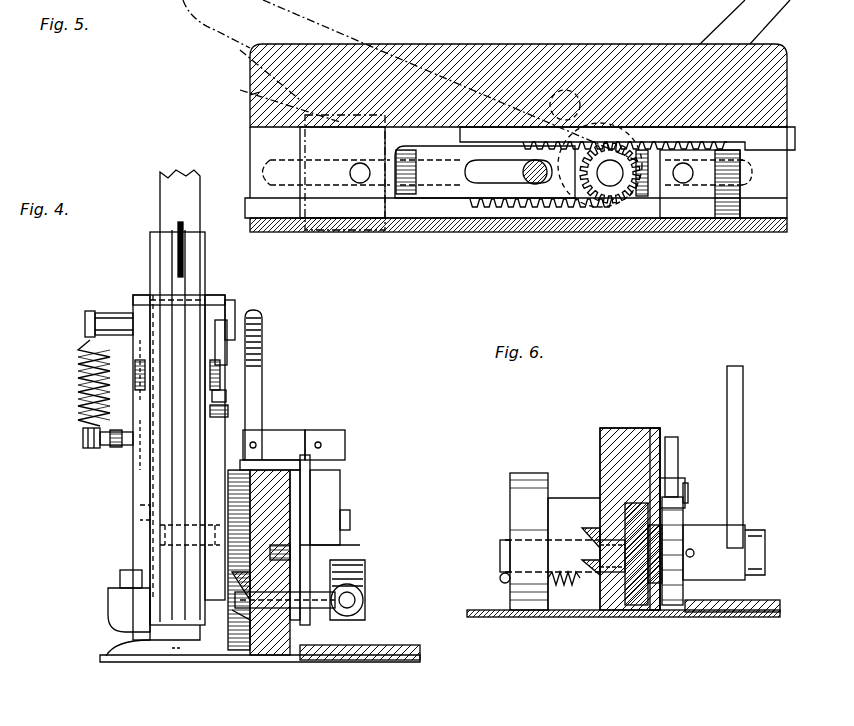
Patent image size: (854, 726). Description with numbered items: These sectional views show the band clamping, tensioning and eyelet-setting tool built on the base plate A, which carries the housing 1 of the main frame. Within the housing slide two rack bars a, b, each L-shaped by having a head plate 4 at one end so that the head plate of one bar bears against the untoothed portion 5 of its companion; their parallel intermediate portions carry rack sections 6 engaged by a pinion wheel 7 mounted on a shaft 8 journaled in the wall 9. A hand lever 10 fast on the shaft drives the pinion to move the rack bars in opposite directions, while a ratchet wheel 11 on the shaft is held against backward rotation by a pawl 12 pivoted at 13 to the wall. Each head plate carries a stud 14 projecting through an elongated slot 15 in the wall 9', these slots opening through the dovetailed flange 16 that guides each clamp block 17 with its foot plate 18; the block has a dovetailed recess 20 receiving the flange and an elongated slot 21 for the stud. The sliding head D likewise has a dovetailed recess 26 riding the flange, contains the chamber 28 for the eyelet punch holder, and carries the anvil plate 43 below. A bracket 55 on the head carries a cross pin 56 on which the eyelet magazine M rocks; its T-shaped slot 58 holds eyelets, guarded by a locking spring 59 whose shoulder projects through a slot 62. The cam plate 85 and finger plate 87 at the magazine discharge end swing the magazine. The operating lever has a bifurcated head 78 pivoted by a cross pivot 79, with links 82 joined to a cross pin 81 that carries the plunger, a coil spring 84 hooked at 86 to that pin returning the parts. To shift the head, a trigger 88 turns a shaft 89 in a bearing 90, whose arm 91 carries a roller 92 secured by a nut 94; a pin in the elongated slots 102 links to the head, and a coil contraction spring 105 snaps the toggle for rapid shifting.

In FIG. 5, the housing 1 is at (635, 58).
In FIG. 4, the housing 1 is at (275, 656).
In FIG. 6, the housing 1 is at (608, 428).
In FIG. 5, the head plate 4 is at (430, 172).
In FIG. 5, the untoothed portion 5 is at (485, 172).
In FIG. 5, the rack sections 6 is at (490, 250).
In FIG. 6, the rack sections 6 is at (608, 520).
In FIG. 5, the pinion wheel 7 is at (565, 210).
In FIG. 6, the pinion wheel 7 is at (655, 585).
In FIG. 5, the shaft 8 is at (610, 186).
In FIG. 6, the shaft 8 is at (768, 555).
In FIG. 4, the wall 9 is at (341, 528).
In FIG. 6, the wall 9 is at (669, 493).
In FIG. 5, the wall 9' is at (518, 74).
In FIG. 4, the wall 9' is at (236, 548).
In FIG. 6, the wall 9' is at (604, 515).
In FIG. 5, the hand lever 10 is at (305, 12).
In FIG. 6, the hand lever 10 is at (743, 390).
In FIG. 5, the ratchet wheel 11 is at (618, 90).
In FIG. 6, the ratchet wheel 11 is at (684, 510).
In FIG. 5, the pawl 12 is at (580, 80).
In FIG. 6, the pawl 12 is at (672, 440).
In FIG. 6, the pivot 13 is at (686, 485).
In FIG. 5, the stud 14 is at (360, 183).
In FIG. 5, the elongated slot 15 is at (764, 166).
In FIG. 4, the dovetailed flange 16 is at (240, 642).
In FIG. 6, the dovetailed flange 16 is at (575, 588).
In FIG. 5, the clamp block 17 is at (252, 95).
In FIG. 6, the clamp block 17 is at (548, 498).
In FIG. 6, the foot plate 18 is at (510, 600).
In FIG. 6, the dovetailed recess 20 is at (595, 528).
In FIG. 5, the elongated slot 21 is at (718, 184).
In FIG. 6, the elongated slot 21 is at (560, 540).
In FIG. 4, the dovetailed recess 26 is at (238, 575).
In FIG. 4, the chamber 28 is at (218, 530).
In FIG. 4, the anvil plate 43 is at (165, 642).
In FIG. 4, the bracket 55 is at (145, 492).
In FIG. 4, the cross pin 56 is at (225, 400).
In FIG. 4, the T-shaped slot 58 is at (190, 290).
In FIG. 4, the locking spring 59 is at (183, 228).
In FIG. 4, the slot 62 is at (178, 242).
In FIG. 4, the bifurcated head 78 is at (222, 297).
In FIG. 4, the cross pivot 79 is at (88, 316).
In FIG. 5, the cross pin 81 is at (425, 12).
In FIG. 4, the cross pin 81 is at (105, 446).
In FIG. 4, the links 82 is at (220, 380).
In FIG. 4, the coil spring 84 is at (78, 378).
In FIG. 5, the cam plate 85 is at (510, 8).
In FIG. 4, the hooked end 86 is at (82, 437).
In FIG. 4, the finger plate 87 is at (112, 592).
In FIG. 4, the trigger 88 is at (263, 330).
In FIG. 4, the shaft 89 is at (342, 430).
In FIG. 4, the bearing 90 is at (283, 430).
In FIG. 4, the arm 91 is at (330, 474).
In FIG. 4, the roller 92 is at (290, 550).
In FIG. 4, the nut 94 is at (350, 520).
In FIG. 5, the elongated slots 102 is at (508, 171).
In FIG. 4, the coil contraction spring 105 is at (366, 575).
In FIG. 5, the base plate A is at (770, 228).
In FIG. 4, the base plate A is at (185, 660).
In FIG. 5, the sliding head D is at (464, 14).
In FIG. 4, the sliding head D is at (236, 648).
In FIG. 4, the eyelet magazine M is at (160, 505).
In FIG. 5, the rack bar a is at (627, 137).
In FIG. 4, the rack bar a is at (360, 545).
In FIG. 5, the rack bar b is at (258, 198).
In FIG. 4, the rack bar b is at (295, 636).